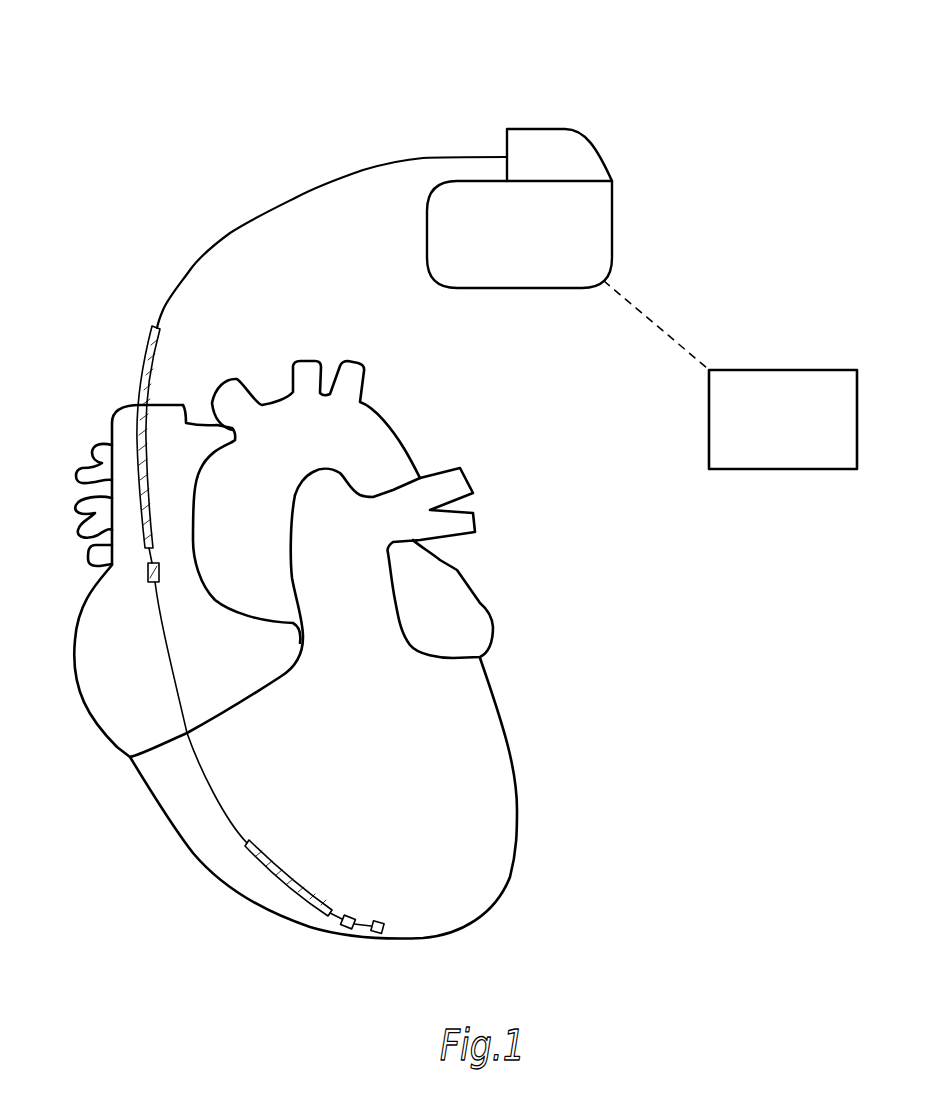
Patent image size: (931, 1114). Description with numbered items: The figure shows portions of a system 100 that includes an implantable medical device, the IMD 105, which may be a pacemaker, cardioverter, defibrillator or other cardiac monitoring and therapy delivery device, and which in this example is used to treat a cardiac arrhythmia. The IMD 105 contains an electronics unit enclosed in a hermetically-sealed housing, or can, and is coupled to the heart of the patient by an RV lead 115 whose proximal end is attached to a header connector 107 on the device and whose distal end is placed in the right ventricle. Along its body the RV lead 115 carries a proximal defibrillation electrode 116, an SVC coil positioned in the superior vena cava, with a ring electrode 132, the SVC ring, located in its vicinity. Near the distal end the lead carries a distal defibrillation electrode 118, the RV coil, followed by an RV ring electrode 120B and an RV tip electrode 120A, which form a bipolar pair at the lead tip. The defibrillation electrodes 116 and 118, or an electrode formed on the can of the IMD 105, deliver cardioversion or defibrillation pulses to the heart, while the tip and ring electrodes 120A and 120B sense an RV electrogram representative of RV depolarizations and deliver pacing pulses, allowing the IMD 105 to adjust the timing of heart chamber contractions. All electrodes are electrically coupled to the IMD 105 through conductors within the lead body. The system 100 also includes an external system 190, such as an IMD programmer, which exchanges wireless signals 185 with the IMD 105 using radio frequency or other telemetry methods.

The system 100 is at (100, 30).
The IMD 105 is at (612, 230).
The header connector 107 is at (598, 148).
The RV lead 115 is at (218, 241).
The proximal defibrillation electrode 116 is at (148, 470).
The distal defibrillation electrode 118 is at (287, 888).
The RV tip electrode 120A is at (378, 933).
The RV ring electrode 120B is at (349, 929).
The ring electrode 132 is at (147, 573).
The wireless signals 185 is at (656, 319).
The external system 190 is at (838, 370).